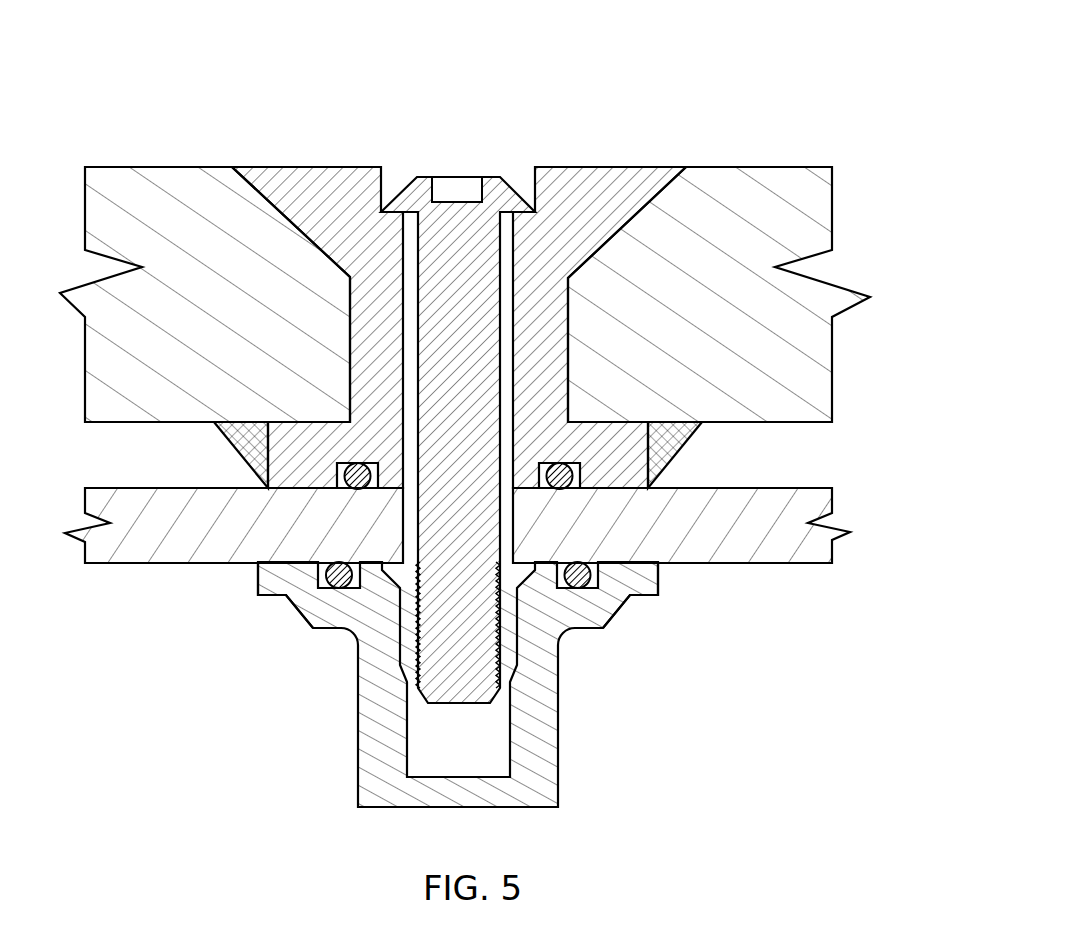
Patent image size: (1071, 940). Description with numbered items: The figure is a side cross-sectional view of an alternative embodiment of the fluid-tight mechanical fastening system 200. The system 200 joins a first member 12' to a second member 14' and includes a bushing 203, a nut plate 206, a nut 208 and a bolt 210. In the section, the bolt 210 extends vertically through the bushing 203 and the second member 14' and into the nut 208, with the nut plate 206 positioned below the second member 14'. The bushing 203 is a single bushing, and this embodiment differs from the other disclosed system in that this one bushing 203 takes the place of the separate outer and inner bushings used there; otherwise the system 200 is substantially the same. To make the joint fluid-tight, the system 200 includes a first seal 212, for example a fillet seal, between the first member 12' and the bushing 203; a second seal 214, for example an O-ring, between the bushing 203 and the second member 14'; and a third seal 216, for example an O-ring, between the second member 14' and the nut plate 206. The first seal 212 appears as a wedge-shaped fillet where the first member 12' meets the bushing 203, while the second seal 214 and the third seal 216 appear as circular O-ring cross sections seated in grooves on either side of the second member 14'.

The fluid-tight mechanical fastening system 200 is at (765, 79).
The first member 12' is at (475, 294).
The second member 14' is at (469, 520).
The bushing 203 is at (563, 320).
The nut plate 206 is at (558, 807).
The nut 208 is at (515, 618).
The bolt 210 is at (487, 268).
The first seal 212 is at (685, 442).
The second seal 214 is at (560, 487).
The third seal 216 is at (577, 570).